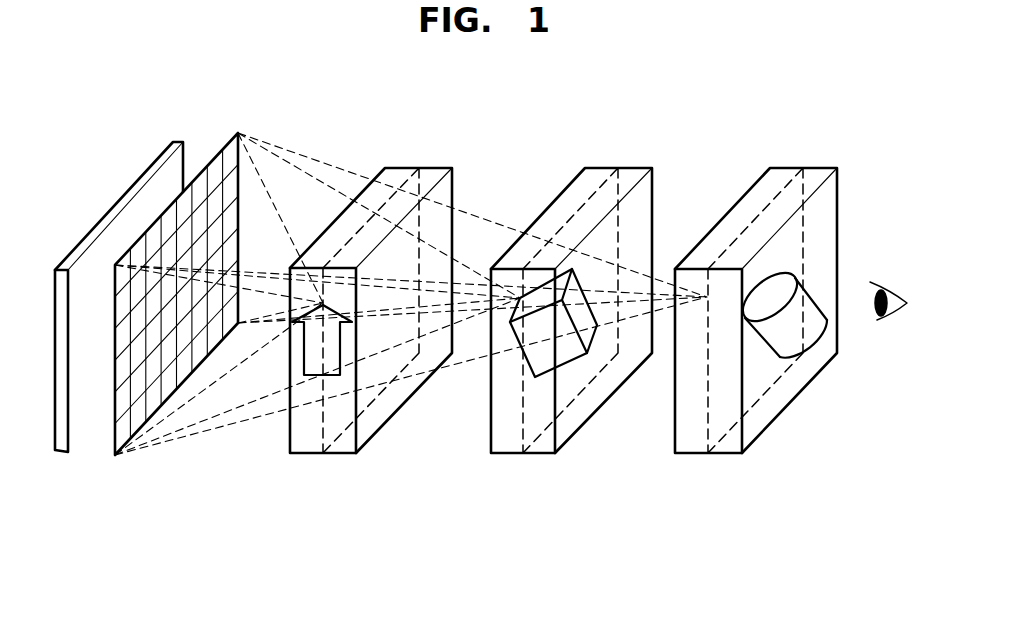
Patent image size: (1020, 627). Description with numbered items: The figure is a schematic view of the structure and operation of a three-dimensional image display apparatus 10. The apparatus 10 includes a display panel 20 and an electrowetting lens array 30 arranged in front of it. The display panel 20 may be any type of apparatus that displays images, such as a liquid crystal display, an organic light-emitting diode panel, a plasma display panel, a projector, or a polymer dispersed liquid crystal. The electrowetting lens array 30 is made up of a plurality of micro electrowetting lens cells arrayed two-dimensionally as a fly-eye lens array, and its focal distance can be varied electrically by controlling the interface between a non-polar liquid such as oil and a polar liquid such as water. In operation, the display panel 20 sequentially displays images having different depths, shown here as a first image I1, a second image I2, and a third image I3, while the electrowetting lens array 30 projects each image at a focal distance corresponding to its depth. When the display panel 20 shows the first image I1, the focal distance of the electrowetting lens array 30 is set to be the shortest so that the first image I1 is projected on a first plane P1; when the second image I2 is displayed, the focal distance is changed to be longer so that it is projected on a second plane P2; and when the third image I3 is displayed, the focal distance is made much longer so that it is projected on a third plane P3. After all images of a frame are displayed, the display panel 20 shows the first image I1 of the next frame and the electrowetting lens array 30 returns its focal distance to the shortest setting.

The 3-dimensional image display apparatus 10 is at (163, 474).
The display panel 20 is at (166, 150).
The electrowetting lens array 30 is at (220, 150).
The first plane P1 is at (403, 182).
The second plane P2 is at (603, 182).
The third plane P3 is at (788, 182).
The first image I1 is at (313, 376).
The second image I2 is at (536, 377).
The third image I3 is at (768, 350).